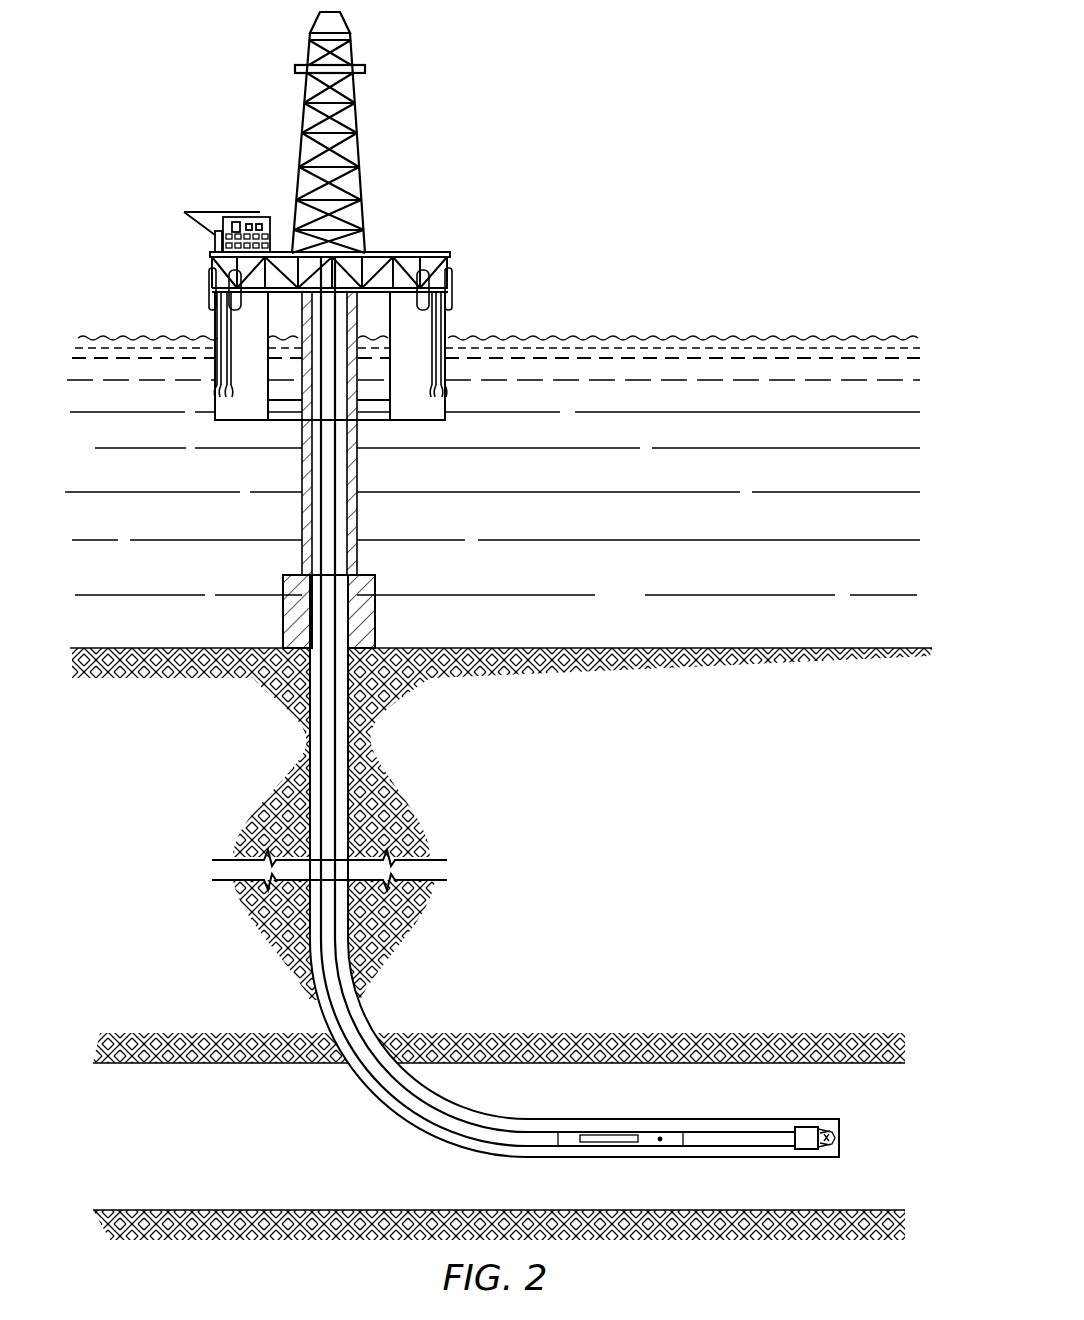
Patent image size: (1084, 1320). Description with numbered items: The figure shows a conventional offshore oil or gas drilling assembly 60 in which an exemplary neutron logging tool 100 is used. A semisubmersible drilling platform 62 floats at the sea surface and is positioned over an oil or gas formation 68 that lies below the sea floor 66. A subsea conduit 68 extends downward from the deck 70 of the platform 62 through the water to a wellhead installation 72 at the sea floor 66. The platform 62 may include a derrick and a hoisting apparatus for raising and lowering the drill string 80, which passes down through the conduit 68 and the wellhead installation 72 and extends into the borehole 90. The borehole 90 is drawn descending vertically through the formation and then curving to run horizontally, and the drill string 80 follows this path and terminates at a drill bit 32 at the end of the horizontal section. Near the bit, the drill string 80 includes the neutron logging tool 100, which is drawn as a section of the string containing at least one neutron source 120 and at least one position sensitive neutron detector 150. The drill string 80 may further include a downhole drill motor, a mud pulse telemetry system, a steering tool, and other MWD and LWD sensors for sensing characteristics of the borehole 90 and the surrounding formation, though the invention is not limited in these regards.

The offshore oil or gas drilling assembly 60 is at (340, 216).
The semisubmersible drilling platform 62 is at (435, 252).
The deck 70 is at (449, 283).
The drill string 80 is at (333, 433).
The subsea conduit 68 is at (357, 510).
The wellhead installation 72 is at (376, 575).
The sea floor 66 is at (602, 647).
The borehole 90 is at (312, 758).
The neutron logging tool 100 is at (645, 1136).
The position sensitive neutron detector 150 is at (610, 1134).
The neutron source 120 is at (665, 1140).
The drill bit 32 is at (808, 1127).